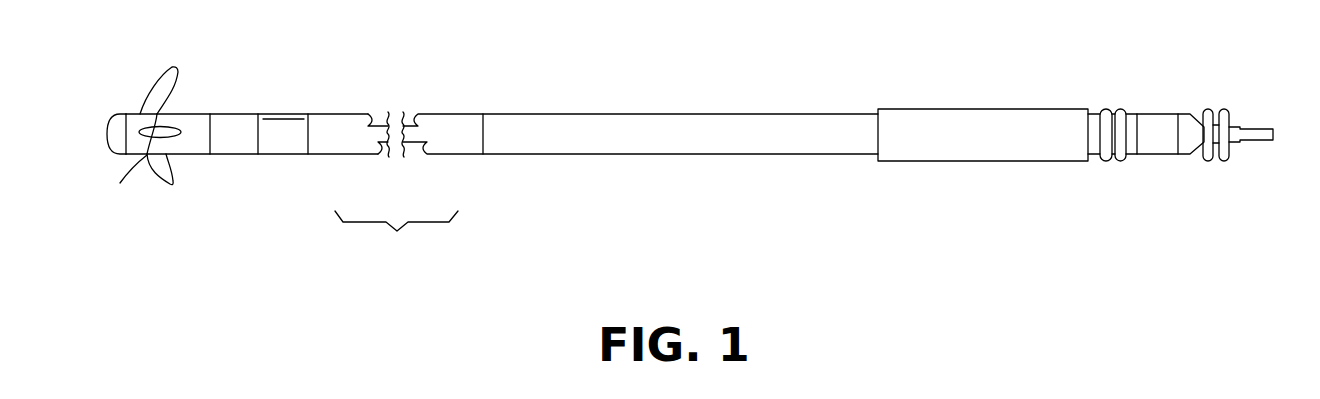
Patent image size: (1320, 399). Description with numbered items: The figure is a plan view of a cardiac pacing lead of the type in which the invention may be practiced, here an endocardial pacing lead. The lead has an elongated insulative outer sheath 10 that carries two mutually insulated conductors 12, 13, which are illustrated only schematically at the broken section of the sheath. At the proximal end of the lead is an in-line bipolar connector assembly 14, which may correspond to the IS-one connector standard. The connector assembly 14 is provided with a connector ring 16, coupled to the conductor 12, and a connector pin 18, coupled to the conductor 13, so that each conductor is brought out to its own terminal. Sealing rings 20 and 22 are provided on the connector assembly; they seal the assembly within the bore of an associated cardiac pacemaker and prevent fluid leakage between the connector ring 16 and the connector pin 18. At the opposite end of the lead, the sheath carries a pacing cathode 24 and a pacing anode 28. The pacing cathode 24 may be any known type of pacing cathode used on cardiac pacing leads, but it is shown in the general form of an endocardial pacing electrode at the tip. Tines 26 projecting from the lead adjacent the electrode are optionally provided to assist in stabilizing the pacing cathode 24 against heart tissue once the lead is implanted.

The insulative outer sheath 10 is at (340, 114).
The conductor 12 is at (388, 111).
The conductor 13 is at (387, 157).
The in-line bipolar connector assembly 14 is at (934, 182).
The connector ring 16 is at (1157, 155).
The connector pin 18 is at (1255, 142).
The sealing ring 20 is at (1118, 163).
The sealing ring 22 is at (1222, 162).
The pacing cathode 24 is at (106, 136).
The tines 26 is at (178, 86).
The pacing anode 28 is at (291, 114).